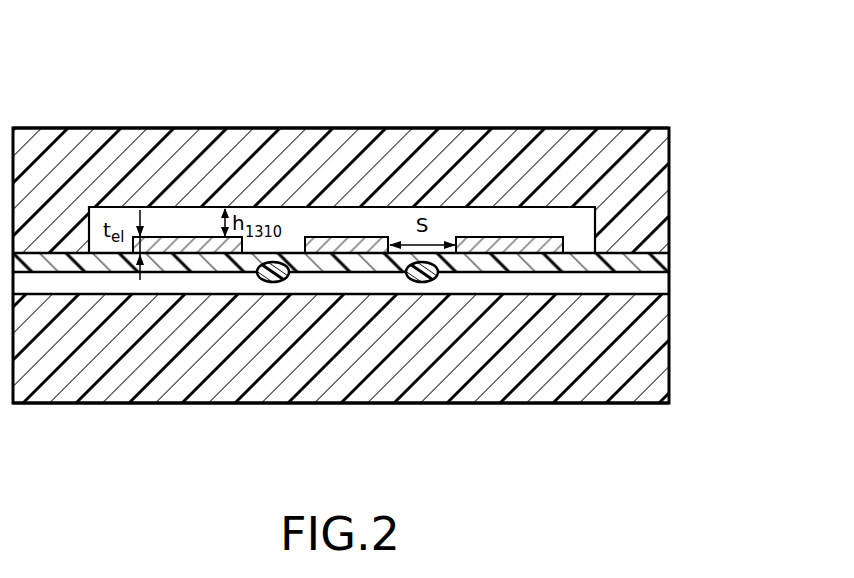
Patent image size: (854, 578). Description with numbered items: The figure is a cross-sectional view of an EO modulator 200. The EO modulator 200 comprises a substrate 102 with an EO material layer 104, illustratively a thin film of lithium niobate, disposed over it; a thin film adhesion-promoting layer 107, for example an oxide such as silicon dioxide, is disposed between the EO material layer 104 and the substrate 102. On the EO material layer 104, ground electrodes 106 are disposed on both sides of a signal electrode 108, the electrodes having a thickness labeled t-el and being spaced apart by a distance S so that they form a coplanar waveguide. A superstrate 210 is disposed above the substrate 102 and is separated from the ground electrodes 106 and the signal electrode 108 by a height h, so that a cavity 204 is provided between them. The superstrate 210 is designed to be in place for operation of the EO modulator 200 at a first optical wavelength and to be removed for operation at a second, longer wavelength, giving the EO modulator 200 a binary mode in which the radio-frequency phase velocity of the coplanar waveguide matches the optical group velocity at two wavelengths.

The EO modulator 200 is at (388, 34).
The superstrate 210 is at (669, 148).
The cavity 204 is at (308, 227).
The ground electrodes 106 is at (185, 237).
The signal electrode 108 is at (377, 237).
The EO material layer 104 is at (669, 259).
The thin film adhesion-promoting layer 107 is at (669, 284).
The substrate 102 is at (669, 357).